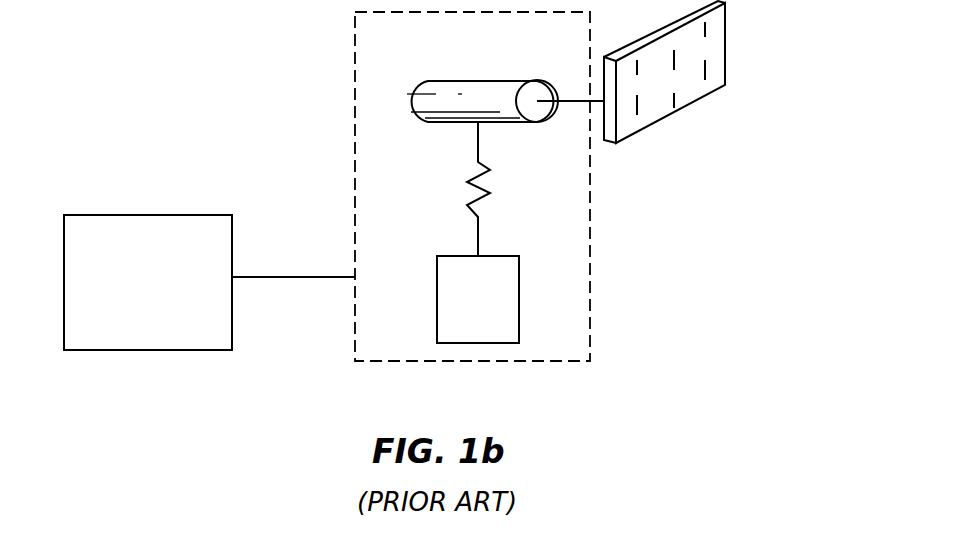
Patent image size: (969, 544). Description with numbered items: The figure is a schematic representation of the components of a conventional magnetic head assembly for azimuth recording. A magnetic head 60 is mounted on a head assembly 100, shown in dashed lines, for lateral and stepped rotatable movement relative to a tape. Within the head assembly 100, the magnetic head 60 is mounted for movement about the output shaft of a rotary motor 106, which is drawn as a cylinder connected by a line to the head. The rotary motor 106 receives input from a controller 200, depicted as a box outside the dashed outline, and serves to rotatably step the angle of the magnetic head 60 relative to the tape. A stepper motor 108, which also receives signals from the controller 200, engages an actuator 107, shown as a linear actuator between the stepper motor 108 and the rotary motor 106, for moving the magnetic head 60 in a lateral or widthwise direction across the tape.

The magnetic head 60 is at (727, 22).
The head assembly 100 is at (355, 190).
The rotary motor 106 is at (450, 80).
The actuator 107 is at (488, 198).
The stepper motor 108 is at (519, 290).
The controller 200 is at (170, 294).